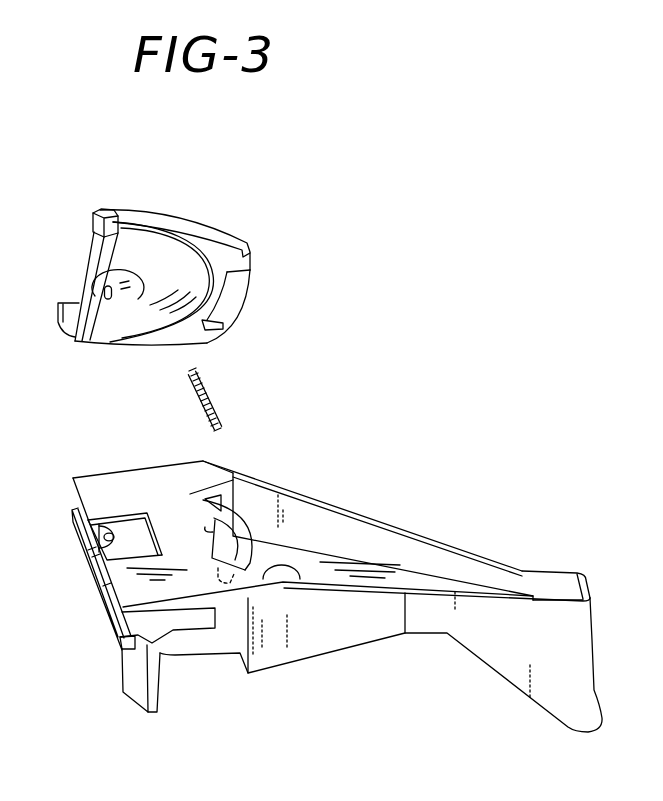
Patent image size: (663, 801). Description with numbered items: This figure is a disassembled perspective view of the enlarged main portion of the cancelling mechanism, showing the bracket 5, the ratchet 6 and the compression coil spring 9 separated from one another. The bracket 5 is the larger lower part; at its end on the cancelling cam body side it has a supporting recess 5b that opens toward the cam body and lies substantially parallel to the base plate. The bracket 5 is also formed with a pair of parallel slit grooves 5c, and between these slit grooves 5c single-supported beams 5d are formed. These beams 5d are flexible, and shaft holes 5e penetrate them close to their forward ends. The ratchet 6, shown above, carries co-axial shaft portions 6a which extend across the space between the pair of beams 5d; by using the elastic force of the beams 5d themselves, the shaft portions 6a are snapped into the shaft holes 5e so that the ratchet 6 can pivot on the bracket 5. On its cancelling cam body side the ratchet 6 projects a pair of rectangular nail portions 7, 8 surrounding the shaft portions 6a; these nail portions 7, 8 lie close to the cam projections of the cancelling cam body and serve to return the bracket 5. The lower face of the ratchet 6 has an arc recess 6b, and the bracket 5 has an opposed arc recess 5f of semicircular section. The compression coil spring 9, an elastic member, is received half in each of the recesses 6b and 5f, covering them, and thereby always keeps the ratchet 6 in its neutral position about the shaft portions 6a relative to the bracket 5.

The bracket 5 is at (410, 532).
The supporting recess 5b is at (120, 628).
The slit grooves 5c is at (118, 520).
The single-supported beams 5d is at (129, 532).
The shaft holes 5e is at (107, 528).
The arc recess 5f is at (227, 542).
The ratchet 6 is at (178, 210).
The shaft portions 6a is at (107, 300).
The arc recess 6b is at (237, 303).
The nail portion 7 is at (58, 308).
The nail portion 8 is at (95, 220).
The compression coil spring 9 is at (213, 393).